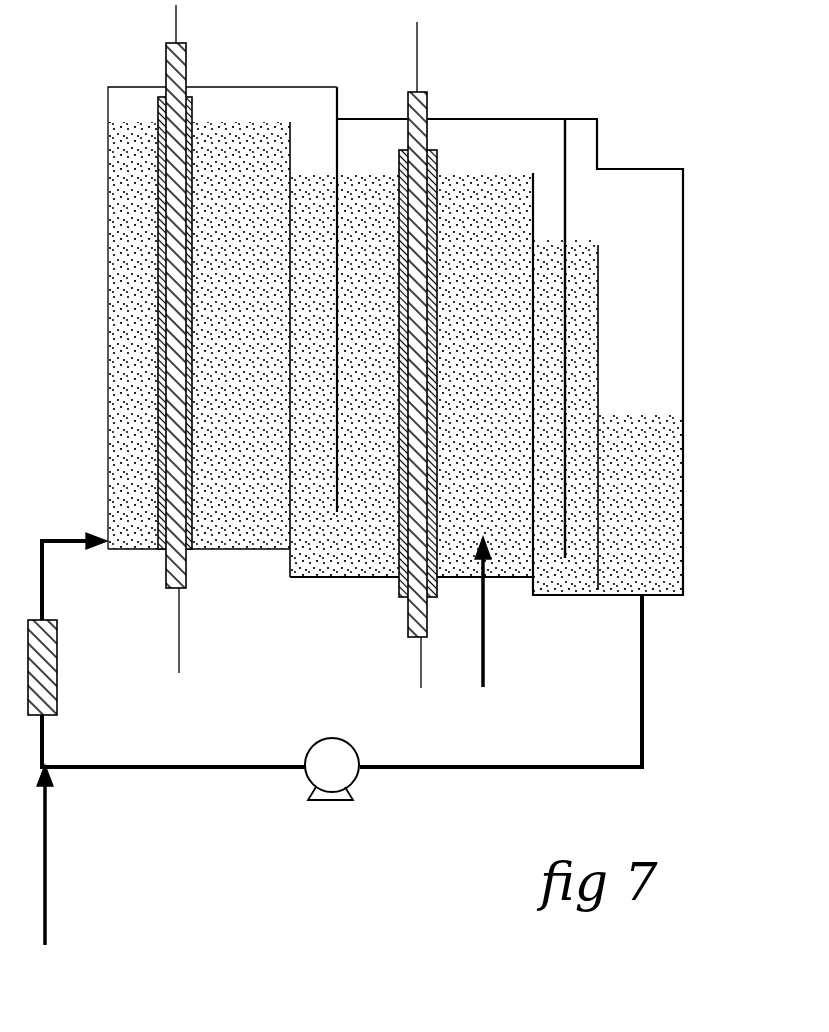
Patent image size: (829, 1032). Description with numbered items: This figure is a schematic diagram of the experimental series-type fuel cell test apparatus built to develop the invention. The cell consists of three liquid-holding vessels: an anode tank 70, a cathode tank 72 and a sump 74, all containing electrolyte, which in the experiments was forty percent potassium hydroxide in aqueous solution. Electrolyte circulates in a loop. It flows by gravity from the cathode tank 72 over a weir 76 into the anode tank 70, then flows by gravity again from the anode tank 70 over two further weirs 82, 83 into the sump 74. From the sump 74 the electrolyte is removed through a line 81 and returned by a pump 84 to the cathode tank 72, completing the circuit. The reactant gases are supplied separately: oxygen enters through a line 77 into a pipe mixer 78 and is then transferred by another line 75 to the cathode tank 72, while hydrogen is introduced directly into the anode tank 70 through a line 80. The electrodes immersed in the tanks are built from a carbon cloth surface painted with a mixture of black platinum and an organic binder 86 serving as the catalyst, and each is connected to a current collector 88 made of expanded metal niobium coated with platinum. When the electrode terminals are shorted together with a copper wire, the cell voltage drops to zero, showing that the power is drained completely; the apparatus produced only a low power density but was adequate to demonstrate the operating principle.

The anode tank 70 is at (480, 213).
The cathode tank 72 is at (120, 277).
The sump 74 is at (635, 502).
The line 75 is at (63, 536).
The weir 76 is at (295, 126).
The line 77 is at (48, 872).
The pipe mixer 78 is at (57, 680).
The line 80 is at (485, 630).
The line 81 is at (642, 665).
The weir 82 is at (538, 178).
The weir 83 is at (600, 248).
The pump 84 is at (334, 752).
The catalyst 86 is at (160, 190).
The current collector 88 is at (175, 63).